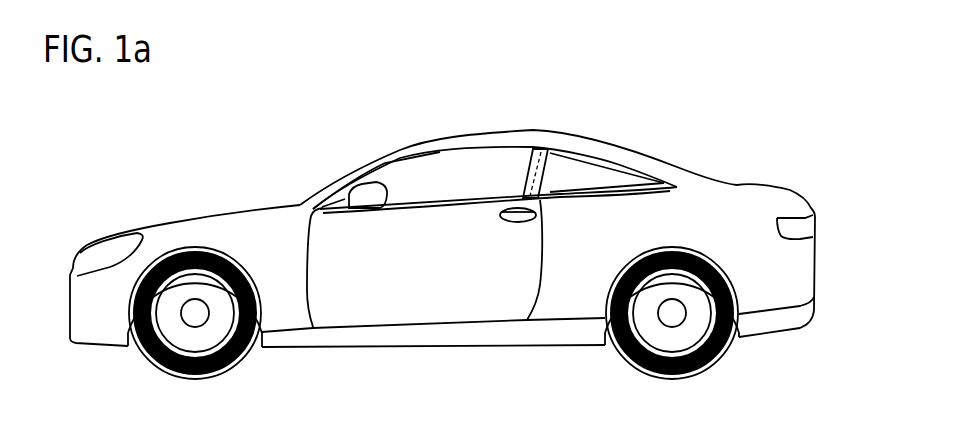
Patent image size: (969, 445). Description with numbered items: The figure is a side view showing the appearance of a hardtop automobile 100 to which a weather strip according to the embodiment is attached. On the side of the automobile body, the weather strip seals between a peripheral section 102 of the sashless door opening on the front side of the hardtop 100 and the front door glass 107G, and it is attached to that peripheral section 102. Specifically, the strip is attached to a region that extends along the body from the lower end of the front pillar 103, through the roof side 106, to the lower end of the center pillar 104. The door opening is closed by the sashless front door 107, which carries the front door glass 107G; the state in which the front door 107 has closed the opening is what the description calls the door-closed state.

The hardtop 100 is at (760, 106).
The peripheral section 102 is at (513, 148).
The front pillar 103 is at (358, 175).
The center pillar 104 is at (560, 133).
The roof side 106 is at (480, 138).
The front door 107 is at (425, 265).
The front door glass 107G is at (443, 172).